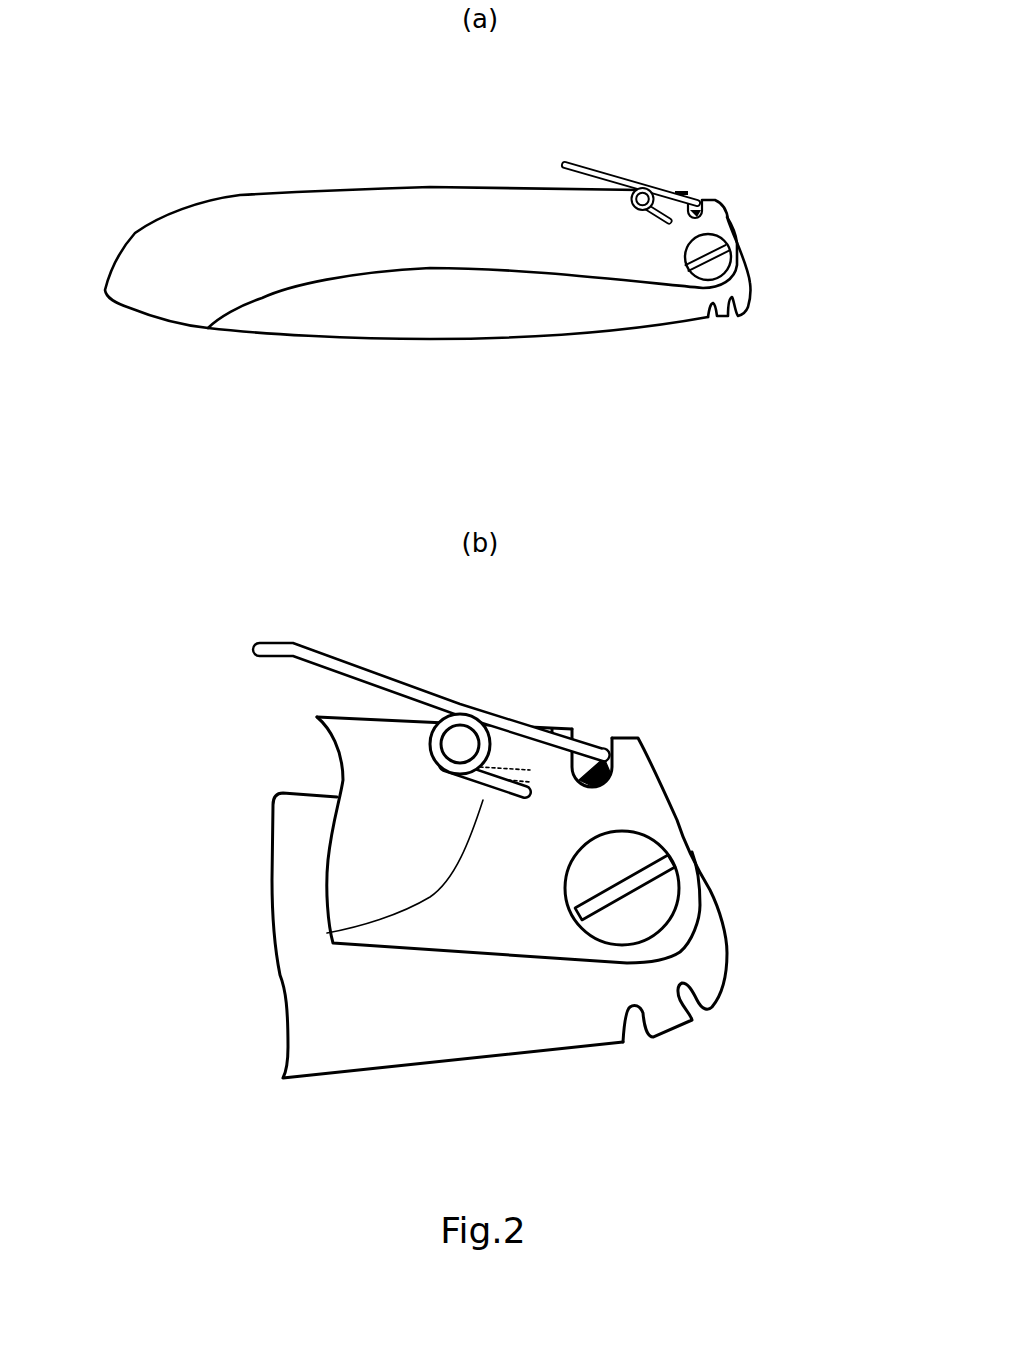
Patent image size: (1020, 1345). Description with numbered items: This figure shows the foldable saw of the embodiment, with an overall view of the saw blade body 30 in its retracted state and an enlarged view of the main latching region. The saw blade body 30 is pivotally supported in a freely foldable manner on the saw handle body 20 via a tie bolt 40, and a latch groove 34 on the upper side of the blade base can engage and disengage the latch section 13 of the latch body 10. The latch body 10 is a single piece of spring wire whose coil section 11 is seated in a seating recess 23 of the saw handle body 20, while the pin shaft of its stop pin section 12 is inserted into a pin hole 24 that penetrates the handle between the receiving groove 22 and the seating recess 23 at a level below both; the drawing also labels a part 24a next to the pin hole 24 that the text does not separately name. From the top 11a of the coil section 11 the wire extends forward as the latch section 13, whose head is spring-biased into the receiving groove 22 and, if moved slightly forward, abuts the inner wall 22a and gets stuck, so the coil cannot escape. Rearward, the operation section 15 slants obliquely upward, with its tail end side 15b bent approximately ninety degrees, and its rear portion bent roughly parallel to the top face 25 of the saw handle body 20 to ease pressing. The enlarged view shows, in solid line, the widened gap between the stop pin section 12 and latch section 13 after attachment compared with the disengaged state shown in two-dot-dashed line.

The latch body 10 is at (627, 190).
The coil section 11 is at (631, 202).
The top of the coil section 11a is at (460, 703).
The stop pin section 12 is at (655, 218).
The latch section 13 is at (670, 190).
The operation section 15 is at (597, 163).
The tail end side 15b is at (562, 158).
The saw handle body 20 is at (248, 228).
The receiving groove 22 is at (718, 184).
The inner wall of the receiving groove 22a is at (578, 732).
The seating recess 23 is at (631, 208).
The pin hole 24 is at (668, 222).
The lower arm base portion 24a is at (487, 785).
The top face 25 is at (357, 170).
The saw blade body 30 is at (379, 317).
The latch groove 34 is at (722, 316).
The tie bolt 40 is at (723, 267).